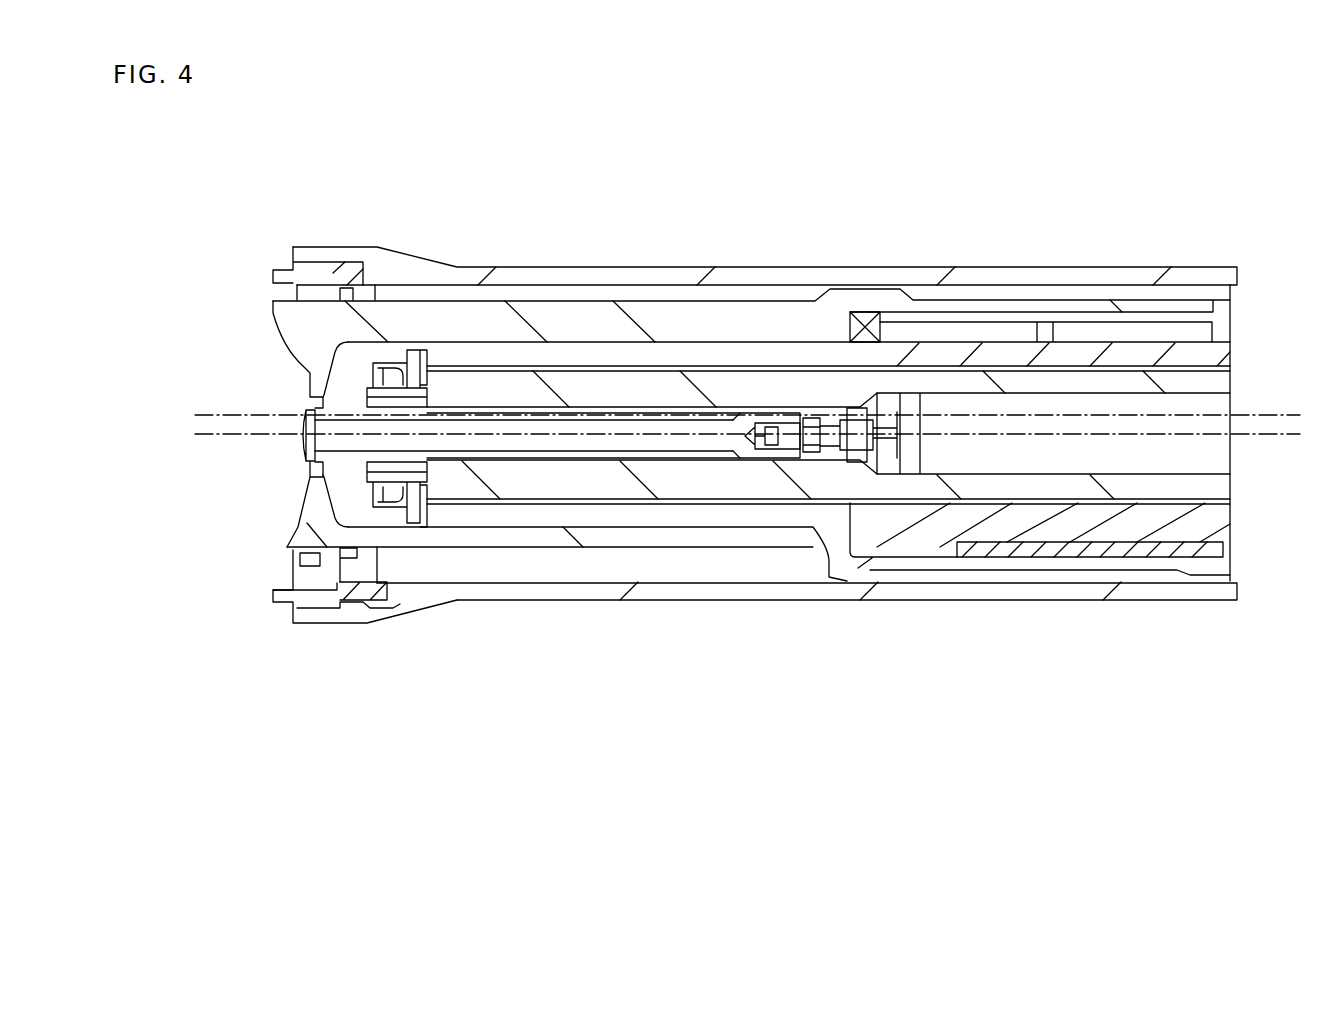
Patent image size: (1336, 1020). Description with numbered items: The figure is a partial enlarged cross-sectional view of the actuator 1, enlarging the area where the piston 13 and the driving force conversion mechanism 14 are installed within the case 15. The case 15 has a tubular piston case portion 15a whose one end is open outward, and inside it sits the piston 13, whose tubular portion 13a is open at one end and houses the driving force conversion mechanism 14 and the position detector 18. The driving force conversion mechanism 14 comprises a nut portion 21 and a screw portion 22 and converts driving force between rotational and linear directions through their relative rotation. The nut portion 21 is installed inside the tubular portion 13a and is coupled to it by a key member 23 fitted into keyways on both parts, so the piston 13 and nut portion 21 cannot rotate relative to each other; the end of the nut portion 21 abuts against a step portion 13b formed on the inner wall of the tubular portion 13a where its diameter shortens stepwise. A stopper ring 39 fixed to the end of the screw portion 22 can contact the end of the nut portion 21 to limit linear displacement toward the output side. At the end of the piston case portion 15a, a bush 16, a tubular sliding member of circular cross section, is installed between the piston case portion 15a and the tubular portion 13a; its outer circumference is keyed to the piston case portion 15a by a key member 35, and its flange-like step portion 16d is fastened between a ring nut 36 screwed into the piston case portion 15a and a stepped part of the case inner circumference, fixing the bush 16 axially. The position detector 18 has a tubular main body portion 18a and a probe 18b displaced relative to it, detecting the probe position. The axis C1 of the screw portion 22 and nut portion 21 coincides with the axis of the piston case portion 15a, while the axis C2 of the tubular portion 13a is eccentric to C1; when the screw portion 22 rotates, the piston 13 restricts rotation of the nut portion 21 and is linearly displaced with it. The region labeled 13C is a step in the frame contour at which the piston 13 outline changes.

The actuator 1 is at (940, 187).
The piston 13 is at (751, 423).
The tubular portion 13a is at (417, 310).
The step portion 13b is at (868, 318).
The frame step portion 13C is at (843, 570).
The driving force conversion mechanism 14 is at (828, 594).
The case 15 is at (765, 331).
The piston case portion 15a is at (673, 273).
The bush 16 is at (339, 442).
The step portion 16d is at (347, 258).
The position detector 18 is at (768, 300).
The main body portion 18a is at (1167, 403).
The probe 18b is at (590, 427).
The nut portion 21 is at (893, 537).
The screw portion 22 is at (727, 483).
The key member 23 is at (1062, 550).
The key member 35 is at (368, 592).
The ring nut 36 is at (300, 597).
The stopper ring 39 is at (430, 530).
The axis C1 is at (243, 440).
The axis C2 is at (250, 415).